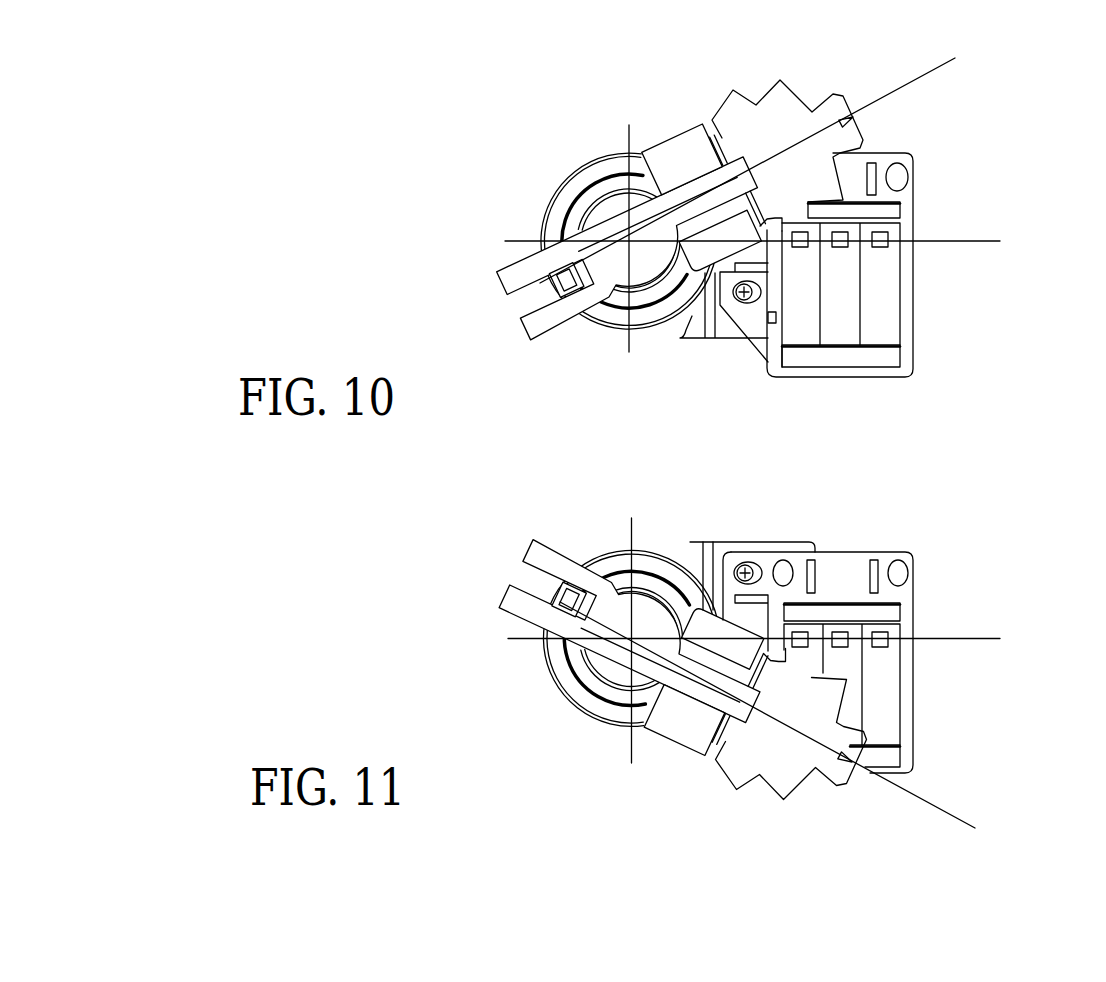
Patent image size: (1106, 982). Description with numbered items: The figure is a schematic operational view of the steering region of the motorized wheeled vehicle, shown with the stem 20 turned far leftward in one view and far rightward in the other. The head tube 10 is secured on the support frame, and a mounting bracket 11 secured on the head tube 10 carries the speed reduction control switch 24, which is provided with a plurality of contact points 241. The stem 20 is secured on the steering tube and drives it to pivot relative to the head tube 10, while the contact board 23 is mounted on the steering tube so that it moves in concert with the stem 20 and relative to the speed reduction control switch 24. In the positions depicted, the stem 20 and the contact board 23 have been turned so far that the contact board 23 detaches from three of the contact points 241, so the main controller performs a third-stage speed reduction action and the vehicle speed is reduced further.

In FIG. 10, the head tube 10 is at (603, 317).
In FIG. 11, the head tube 10 is at (593, 703).
In FIG. 10, the mounting bracket 11 is at (690, 318).
In FIG. 11, the mounting bracket 11 is at (723, 605).
In FIG. 10, the stem 20 is at (640, 226).
In FIG. 11, the stem 20 is at (618, 642).
In FIG. 10, the contact board 23 is at (790, 125).
In FIG. 11, the contact board 23 is at (747, 752).
In FIG. 10, the speed reduction control switch 24 is at (833, 323).
In FIG. 11, the speed reduction control switch 24 is at (885, 690).
In FIG. 10, the contact points 241 is at (800, 242).
In FIG. 11, the contact points 241 is at (800, 638).